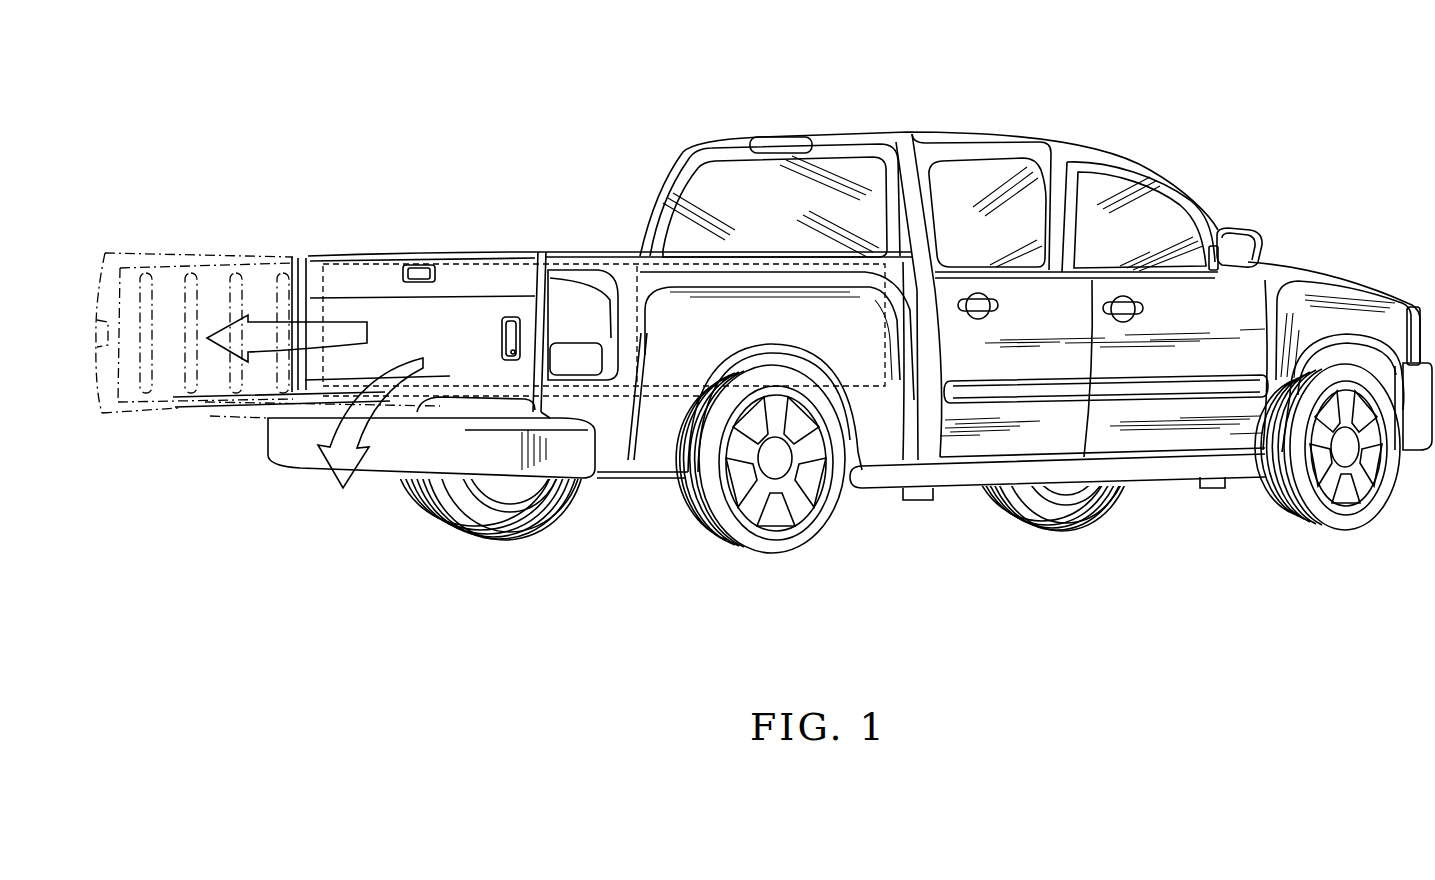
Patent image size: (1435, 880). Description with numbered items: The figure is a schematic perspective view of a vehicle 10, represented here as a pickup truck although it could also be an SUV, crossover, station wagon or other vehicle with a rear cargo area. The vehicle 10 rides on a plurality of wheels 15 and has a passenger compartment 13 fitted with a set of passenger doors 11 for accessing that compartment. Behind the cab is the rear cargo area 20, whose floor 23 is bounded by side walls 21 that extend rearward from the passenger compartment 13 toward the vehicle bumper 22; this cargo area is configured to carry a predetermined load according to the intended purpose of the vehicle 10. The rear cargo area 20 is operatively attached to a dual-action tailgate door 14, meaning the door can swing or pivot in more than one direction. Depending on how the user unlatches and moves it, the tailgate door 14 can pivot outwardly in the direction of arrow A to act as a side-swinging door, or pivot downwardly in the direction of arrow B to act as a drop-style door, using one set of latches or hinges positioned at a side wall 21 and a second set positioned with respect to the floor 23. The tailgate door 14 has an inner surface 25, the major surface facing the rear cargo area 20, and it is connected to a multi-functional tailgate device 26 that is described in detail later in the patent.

The vehicle 10 is at (633, 70).
The passenger doors 11 is at (1055, 300).
The passenger compartment 13 is at (1165, 132).
The dual-action tailgate door 14 is at (413, 330).
The wheels 15 is at (775, 557).
The rear cargo area 20 is at (571, 212).
The side walls 21 is at (462, 326).
The vehicle bumper 22 is at (567, 452).
The floor 23 is at (655, 388).
The inner surface 25 is at (215, 250).
The multi-functional tailgate device 26 is at (265, 277).
The arrow A is at (232, 355).
The arrow B is at (322, 470).